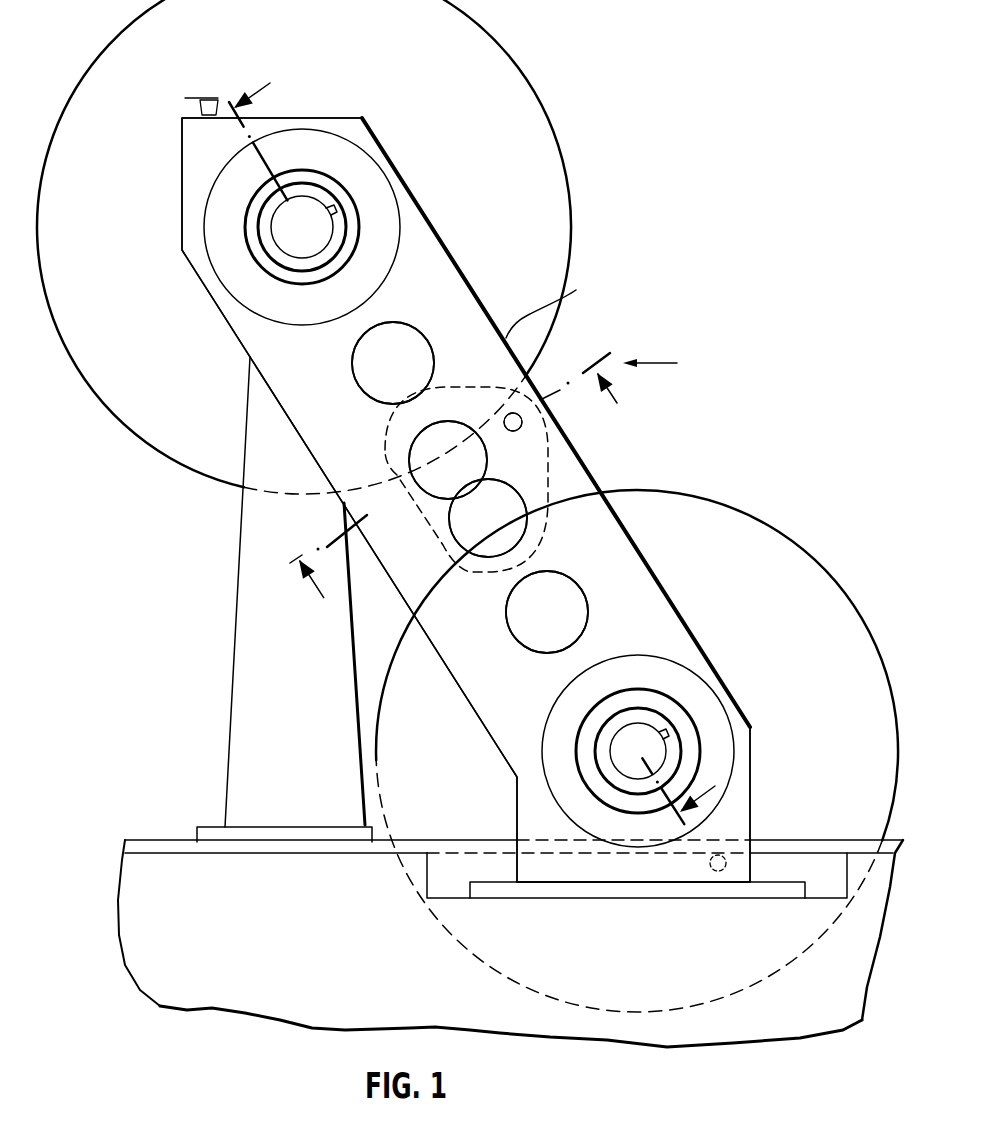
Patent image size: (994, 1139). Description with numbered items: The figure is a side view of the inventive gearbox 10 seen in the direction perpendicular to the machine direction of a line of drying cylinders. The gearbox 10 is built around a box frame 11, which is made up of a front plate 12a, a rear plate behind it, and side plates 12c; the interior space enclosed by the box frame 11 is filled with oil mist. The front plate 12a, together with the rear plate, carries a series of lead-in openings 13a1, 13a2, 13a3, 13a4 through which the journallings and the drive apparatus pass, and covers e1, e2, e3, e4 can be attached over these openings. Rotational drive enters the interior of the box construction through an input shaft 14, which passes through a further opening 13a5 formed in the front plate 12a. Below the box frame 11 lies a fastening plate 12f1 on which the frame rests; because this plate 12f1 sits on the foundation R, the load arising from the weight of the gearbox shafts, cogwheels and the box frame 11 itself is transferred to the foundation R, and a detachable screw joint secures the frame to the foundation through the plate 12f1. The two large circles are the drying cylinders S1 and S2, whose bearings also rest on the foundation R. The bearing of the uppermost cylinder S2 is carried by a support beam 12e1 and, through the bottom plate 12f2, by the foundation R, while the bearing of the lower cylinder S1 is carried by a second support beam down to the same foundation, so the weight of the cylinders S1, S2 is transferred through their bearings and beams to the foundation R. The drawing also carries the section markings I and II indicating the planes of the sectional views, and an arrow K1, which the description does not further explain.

The gearbox 10 is at (421, 151).
The box frame 11 is at (474, 266).
The front plate 12a is at (477, 307).
The side plates 12c is at (556, 306).
The support beam 12e1 is at (243, 703).
The fastening plate 12f1 is at (483, 890).
The bottom plate 12f2 is at (225, 848).
The lead-in opening 13a1 is at (455, 537).
The lead-in opening 13a2 is at (412, 483).
The lead-in opening 13a3 is at (352, 372).
The lead-in opening 13a4 is at (508, 632).
The opening 13a5 is at (508, 414).
The input shaft 14 is at (519, 443).
The foundation R is at (240, 965).
The drying cylinder S1 is at (707, 495).
The drying cylinder S2 is at (547, 203).
The force direction K1 is at (650, 366).
The cover e1 is at (483, 530).
The cover e2 is at (461, 482).
The cover e3 is at (402, 379).
The cover e4 is at (563, 635).
The section line I is at (446, 466).
The section line II is at (480, 444).